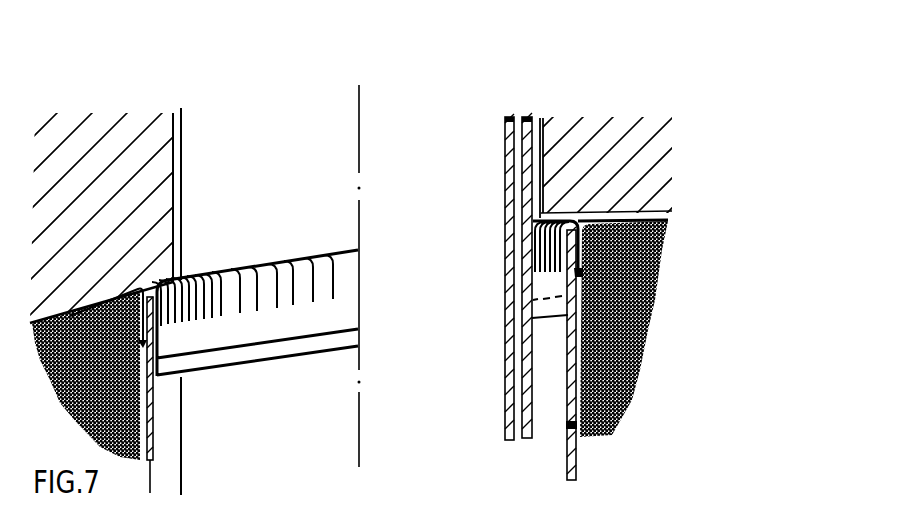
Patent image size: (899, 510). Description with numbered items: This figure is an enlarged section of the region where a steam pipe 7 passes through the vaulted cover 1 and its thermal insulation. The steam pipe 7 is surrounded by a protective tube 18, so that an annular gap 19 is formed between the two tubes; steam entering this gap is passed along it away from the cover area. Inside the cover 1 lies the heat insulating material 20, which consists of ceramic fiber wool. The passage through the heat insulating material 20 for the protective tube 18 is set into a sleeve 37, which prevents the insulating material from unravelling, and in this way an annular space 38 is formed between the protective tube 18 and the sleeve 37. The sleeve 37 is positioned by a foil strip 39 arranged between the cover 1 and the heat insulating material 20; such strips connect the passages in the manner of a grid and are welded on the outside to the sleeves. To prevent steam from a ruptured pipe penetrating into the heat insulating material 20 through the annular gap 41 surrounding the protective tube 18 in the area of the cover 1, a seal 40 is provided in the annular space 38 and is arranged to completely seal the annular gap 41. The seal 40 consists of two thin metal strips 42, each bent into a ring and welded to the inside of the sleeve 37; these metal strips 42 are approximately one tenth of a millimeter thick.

The vaulted cover 1 is at (602, 150).
The steam pipe 7 is at (512, 117).
The protective tube 18 is at (527, 432).
The annular gap 19 is at (526, 146).
The heat insulating material 20 is at (598, 352).
The sleeve 37 is at (575, 425).
The annular space 38 is at (548, 335).
The foil strip 39 is at (640, 218).
The seal 40 is at (547, 285).
The annular gap 41 is at (541, 148).
The metal strip 42 is at (275, 353).